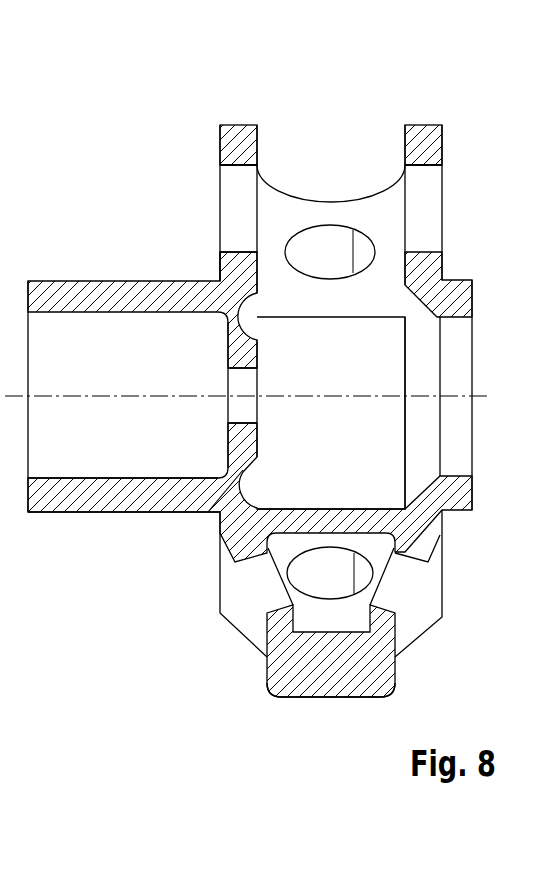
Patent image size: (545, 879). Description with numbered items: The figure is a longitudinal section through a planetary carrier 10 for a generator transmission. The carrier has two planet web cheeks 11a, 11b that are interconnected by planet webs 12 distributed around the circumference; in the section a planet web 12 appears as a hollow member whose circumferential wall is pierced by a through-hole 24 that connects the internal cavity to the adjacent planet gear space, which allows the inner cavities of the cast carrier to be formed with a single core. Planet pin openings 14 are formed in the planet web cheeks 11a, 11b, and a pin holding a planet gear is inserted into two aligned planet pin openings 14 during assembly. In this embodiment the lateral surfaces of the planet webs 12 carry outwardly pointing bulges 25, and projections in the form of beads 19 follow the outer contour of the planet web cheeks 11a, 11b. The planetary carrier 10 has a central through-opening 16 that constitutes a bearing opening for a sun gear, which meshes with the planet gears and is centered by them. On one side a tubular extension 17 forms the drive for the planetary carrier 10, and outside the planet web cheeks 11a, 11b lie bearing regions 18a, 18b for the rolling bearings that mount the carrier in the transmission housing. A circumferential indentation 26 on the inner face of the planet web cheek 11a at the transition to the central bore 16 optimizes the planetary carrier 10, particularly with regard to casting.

The planetary carrier 10 is at (157, 628).
The planet web cheek 11a is at (238, 150).
The planet web cheek 11b is at (424, 150).
The planet web 12 is at (338, 507).
The planet pin opening 14 is at (230, 170).
The through-opening 16 is at (462, 473).
The tubular extension 17 is at (75, 292).
The bearing region 18a is at (200, 283).
The bearing region 18b is at (466, 283).
The bead 19 is at (263, 634).
The through-hole 24 is at (326, 240).
The bulge 25 is at (333, 700).
The indentation 26 is at (234, 508).